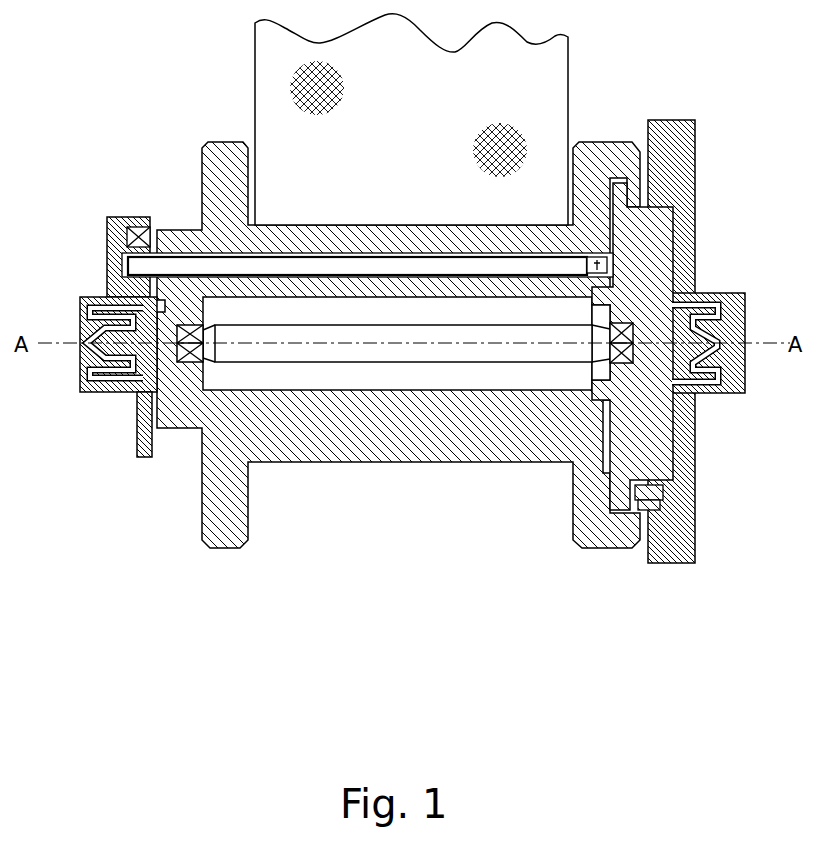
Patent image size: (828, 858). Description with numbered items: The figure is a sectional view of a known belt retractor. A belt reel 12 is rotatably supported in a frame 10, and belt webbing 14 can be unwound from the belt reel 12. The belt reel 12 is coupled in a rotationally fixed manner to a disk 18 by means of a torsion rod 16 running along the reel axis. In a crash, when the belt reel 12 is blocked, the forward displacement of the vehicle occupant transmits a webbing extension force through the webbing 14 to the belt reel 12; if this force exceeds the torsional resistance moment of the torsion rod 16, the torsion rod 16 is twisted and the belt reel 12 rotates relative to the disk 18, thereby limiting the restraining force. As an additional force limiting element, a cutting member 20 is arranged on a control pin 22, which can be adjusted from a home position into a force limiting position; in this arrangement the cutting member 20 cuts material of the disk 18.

The frame 10 is at (683, 143).
The belt reel 12 is at (443, 448).
The belt webbing 14 is at (272, 52).
The torsion rod 16 is at (318, 345).
The disk 18 is at (657, 425).
The cutting member 20 is at (604, 256).
The control pin 22 is at (198, 265).